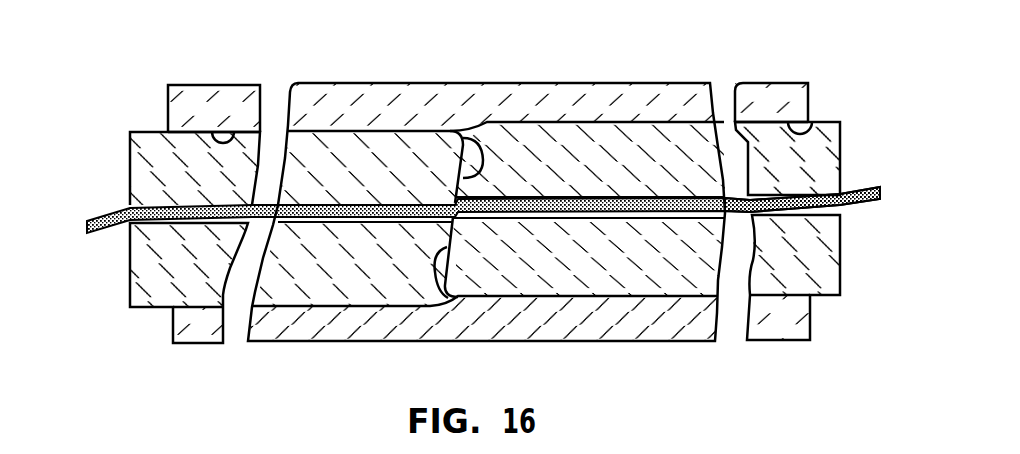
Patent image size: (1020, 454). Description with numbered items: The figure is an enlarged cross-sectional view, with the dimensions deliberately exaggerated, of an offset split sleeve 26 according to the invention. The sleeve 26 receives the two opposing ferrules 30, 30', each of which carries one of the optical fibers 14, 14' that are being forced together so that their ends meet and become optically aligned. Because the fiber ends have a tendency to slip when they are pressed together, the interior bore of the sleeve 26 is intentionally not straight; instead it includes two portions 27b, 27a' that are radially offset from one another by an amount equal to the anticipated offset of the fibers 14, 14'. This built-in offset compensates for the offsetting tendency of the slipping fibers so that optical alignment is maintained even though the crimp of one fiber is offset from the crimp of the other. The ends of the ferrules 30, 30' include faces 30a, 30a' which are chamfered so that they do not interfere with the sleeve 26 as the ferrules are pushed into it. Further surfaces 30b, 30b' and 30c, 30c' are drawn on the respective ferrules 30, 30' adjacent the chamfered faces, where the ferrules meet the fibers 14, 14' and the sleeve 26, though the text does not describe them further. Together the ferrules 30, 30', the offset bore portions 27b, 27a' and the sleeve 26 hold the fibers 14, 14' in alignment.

The fiber 14 is at (481, 235).
The fiber 14' is at (818, 223).
The split sleeve 26 is at (530, 83).
The ferrule 30 is at (166, 237).
The ferrule 30' is at (821, 231).
The face 30a is at (449, 117).
The face 30a' is at (480, 302).
The upper portion of left block 30b is at (165, 91).
The upper portion of right block 30b' is at (821, 102).
The strip slot (left) 30c is at (366, 127).
The strip slot (right) 30c' is at (589, 293).
The bore portion 27b is at (235, 128).
The bore portion 27a' is at (804, 75).